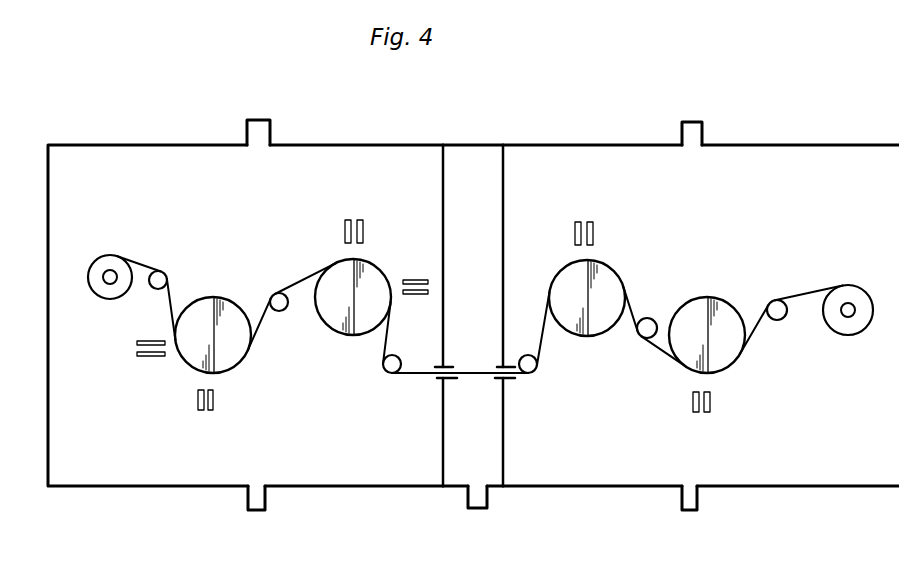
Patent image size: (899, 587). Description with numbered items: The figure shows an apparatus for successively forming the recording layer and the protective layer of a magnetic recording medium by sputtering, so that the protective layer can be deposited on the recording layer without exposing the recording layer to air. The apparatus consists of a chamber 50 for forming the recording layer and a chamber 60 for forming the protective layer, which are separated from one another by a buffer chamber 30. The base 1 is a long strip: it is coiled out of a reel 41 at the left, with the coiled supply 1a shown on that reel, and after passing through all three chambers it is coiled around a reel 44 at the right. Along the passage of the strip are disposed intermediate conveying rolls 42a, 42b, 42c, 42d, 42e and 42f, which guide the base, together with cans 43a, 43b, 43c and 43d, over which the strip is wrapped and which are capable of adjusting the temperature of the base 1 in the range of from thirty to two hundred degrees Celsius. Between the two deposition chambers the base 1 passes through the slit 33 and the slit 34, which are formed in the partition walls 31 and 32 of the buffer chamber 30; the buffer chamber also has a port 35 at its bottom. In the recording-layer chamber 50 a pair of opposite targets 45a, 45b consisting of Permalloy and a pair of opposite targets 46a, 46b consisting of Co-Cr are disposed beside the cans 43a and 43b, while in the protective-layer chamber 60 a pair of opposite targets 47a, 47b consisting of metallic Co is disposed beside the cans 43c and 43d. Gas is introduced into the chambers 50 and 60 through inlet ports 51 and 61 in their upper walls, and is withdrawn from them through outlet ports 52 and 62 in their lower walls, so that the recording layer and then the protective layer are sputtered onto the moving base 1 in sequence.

The base 1 is at (297, 280).
The roll of web 1a is at (105, 260).
The buffer chamber 30 is at (476, 145).
The partition wall 31 is at (443, 238).
The partition wall 32 is at (503, 198).
The slit 33 is at (457, 380).
The slit 34 is at (495, 367).
The exhaust port 35 is at (482, 503).
The reel 41 is at (108, 296).
The intermediate conveying roll 42a is at (163, 274).
The intermediate conveying roll 42b is at (278, 312).
The intermediate conveying roll 42c is at (390, 376).
The intermediate conveying roll 42d is at (533, 376).
The intermediate conveying roll 42e is at (643, 340).
The intermediate conveying roll 42f is at (773, 322).
The can 43a is at (215, 300).
The can 43b is at (340, 327).
The can 43c is at (597, 327).
The can 43d is at (702, 307).
The reel 44 is at (847, 337).
The target 45a is at (137, 350).
The target 45b is at (353, 217).
The target 46a is at (205, 412).
The target 46b is at (417, 277).
The target 47a is at (582, 218).
The target 47b is at (703, 413).
The chamber for forming the recording layer 50 is at (332, 145).
The inlet port 51 is at (258, 130).
The outlet port 52 is at (258, 508).
The chamber for forming the protective layer 60 is at (760, 145).
The inlet port 61 is at (689, 128).
The outlet port 62 is at (687, 504).